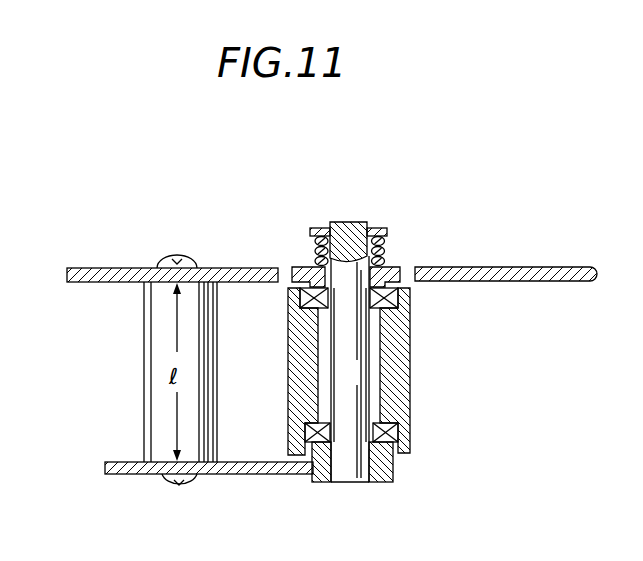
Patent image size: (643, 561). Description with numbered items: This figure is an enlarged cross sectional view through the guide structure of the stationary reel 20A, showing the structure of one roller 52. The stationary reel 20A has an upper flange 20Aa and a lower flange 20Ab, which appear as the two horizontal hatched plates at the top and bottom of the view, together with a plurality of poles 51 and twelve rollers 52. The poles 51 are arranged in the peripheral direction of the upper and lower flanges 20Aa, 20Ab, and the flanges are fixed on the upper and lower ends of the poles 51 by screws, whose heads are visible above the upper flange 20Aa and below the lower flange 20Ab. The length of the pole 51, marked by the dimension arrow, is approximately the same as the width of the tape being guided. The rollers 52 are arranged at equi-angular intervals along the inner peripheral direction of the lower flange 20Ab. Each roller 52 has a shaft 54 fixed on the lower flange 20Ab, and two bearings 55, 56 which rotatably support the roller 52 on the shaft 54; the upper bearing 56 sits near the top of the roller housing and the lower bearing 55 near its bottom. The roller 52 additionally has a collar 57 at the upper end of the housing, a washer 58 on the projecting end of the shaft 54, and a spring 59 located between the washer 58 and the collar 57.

The stationary reel 20A is at (553, 262).
The upper flange 20Aa is at (90, 268).
The lower flange 20Ab is at (110, 474).
The pole 51 is at (147, 333).
The roller 52 is at (410, 360).
The shaft 54 is at (352, 222).
The bearing 55 is at (388, 432).
The bearing 56 is at (398, 299).
The collar 57 is at (296, 268).
The washer 58 is at (378, 229).
The spring 59 is at (385, 252).